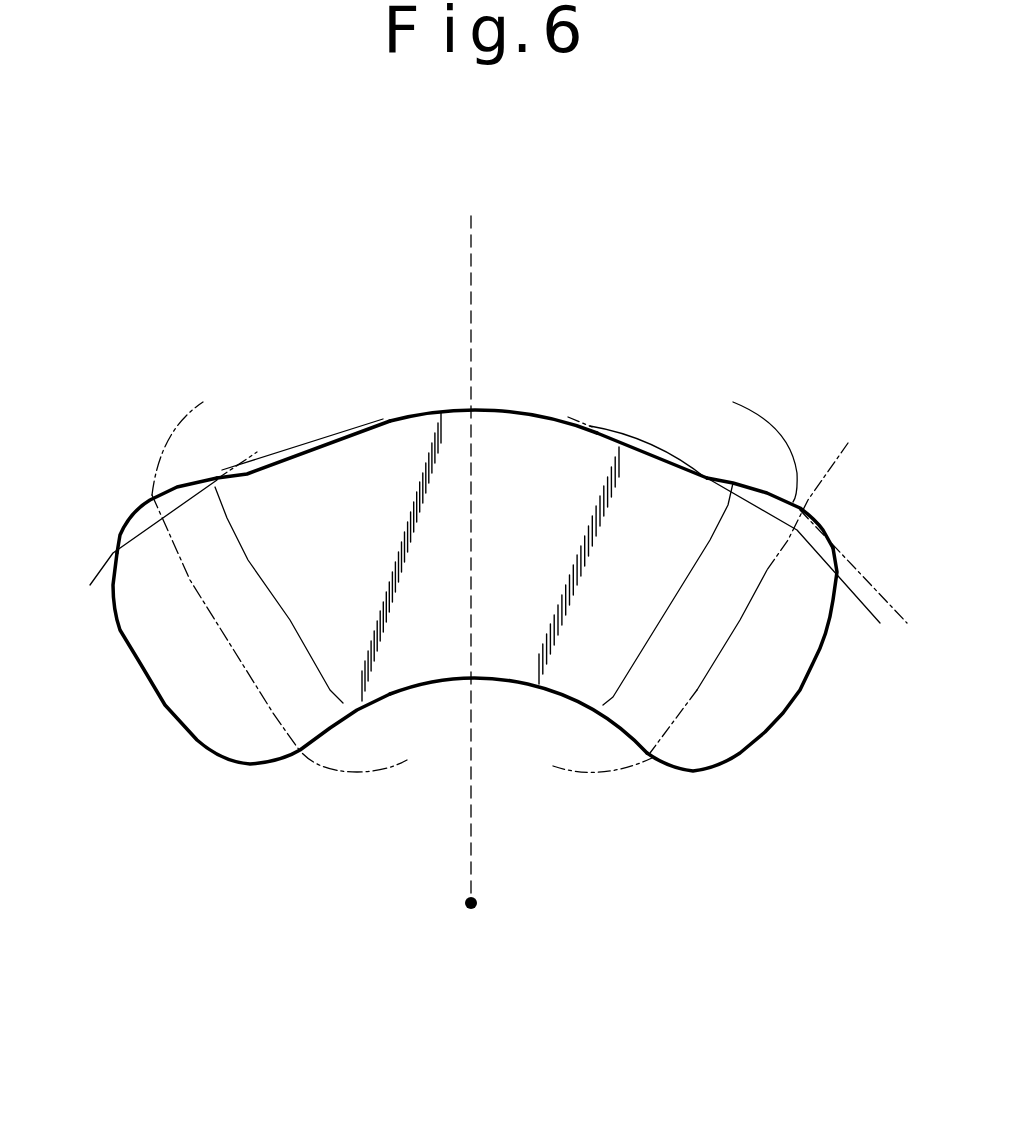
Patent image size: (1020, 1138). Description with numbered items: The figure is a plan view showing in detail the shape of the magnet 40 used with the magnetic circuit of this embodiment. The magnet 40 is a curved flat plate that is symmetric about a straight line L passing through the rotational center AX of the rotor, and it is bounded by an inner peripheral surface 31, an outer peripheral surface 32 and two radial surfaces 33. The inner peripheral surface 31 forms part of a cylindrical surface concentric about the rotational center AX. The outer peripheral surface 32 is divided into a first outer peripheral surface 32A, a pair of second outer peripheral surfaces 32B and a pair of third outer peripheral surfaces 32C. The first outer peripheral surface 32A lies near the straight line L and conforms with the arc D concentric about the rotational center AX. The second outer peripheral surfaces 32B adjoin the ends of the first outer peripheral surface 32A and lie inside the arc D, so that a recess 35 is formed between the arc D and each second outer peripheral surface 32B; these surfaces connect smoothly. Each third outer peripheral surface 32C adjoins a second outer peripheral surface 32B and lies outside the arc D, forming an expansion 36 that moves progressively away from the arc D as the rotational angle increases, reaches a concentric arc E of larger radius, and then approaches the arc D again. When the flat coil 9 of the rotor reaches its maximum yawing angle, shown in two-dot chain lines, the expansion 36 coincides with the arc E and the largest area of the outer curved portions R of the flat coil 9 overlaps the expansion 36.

The magnet 40 is at (557, 272).
The inner peripheral surface 31 is at (427, 683).
The outer peripheral surface 32 is at (796, 322).
The first outer peripheral surface 32A is at (515, 413).
The second outer peripheral surface 32B is at (612, 436).
The third outer peripheral surface 32C is at (768, 483).
The radial surface 33 is at (133, 653).
The recess 35 is at (311, 440).
The expansion 36 is at (175, 500).
The flat coil 9 is at (253, 594).
The straight line L is at (474, 539).
The rotational center AX is at (478, 902).
The outer curved portion R is at (612, 828).
The arc D is at (794, 572).
The arc E is at (861, 584).